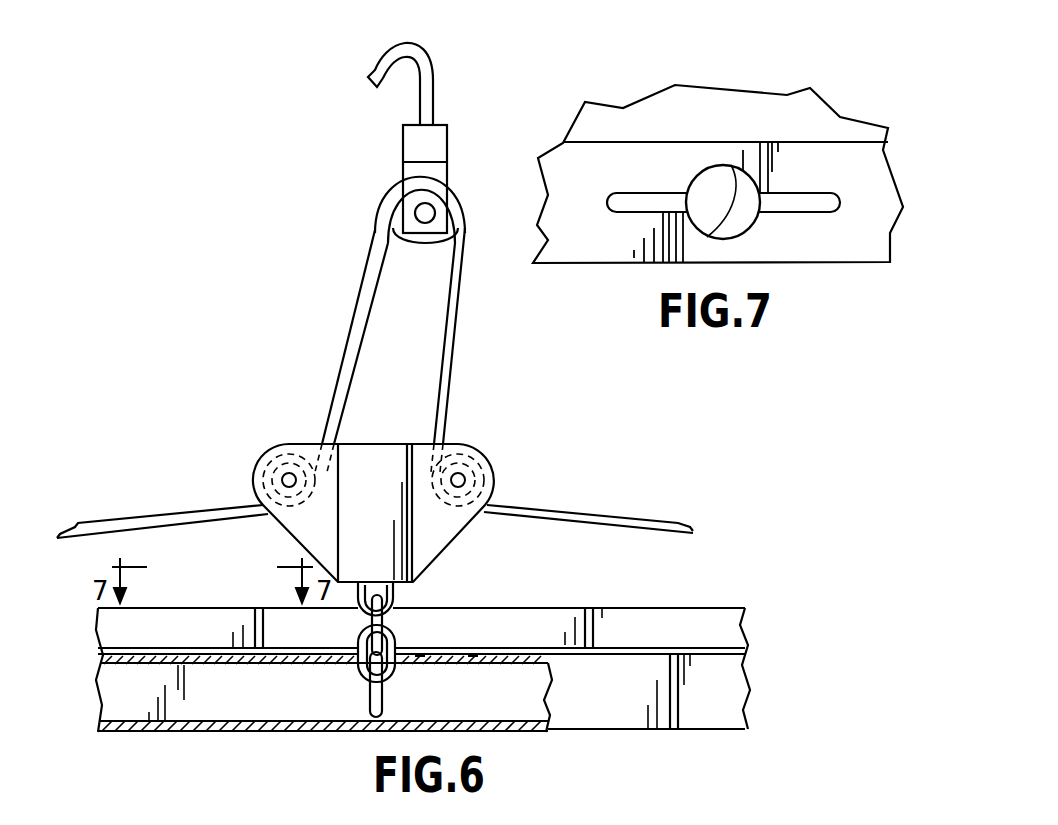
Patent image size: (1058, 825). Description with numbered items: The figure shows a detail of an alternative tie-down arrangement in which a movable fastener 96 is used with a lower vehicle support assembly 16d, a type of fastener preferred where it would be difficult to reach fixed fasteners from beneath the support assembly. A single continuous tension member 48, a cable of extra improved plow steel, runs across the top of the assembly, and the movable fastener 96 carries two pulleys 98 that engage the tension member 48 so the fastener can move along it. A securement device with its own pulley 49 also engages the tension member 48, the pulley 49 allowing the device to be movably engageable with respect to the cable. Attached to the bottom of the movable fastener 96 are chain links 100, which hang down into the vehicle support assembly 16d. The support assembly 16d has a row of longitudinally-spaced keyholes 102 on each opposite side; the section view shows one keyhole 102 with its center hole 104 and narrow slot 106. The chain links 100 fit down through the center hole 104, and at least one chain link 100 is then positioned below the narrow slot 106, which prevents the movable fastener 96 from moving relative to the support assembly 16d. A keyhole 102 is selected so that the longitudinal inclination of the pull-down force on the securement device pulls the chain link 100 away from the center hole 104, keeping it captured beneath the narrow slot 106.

In FIG. 6, the vehicle support assembly 16d is at (732, 702).
In FIG. 6, the tension member 48 is at (643, 516).
In FIG. 6, the pulley 49 is at (410, 245).
In FIG. 6, the movable fastener 96 is at (437, 533).
In FIG. 6, the pulleys 98 is at (290, 444).
In FIG. 6, the chain links 100 is at (400, 643).
In FIG. 7, the keyhole 102 is at (657, 197).
In FIG. 6, the center hole 104 is at (420, 663).
In FIG. 7, the center hole 104 is at (731, 165).
In FIG. 6, the narrow slot 106 is at (473, 663).
In FIG. 7, the narrow slot 106 is at (813, 200).